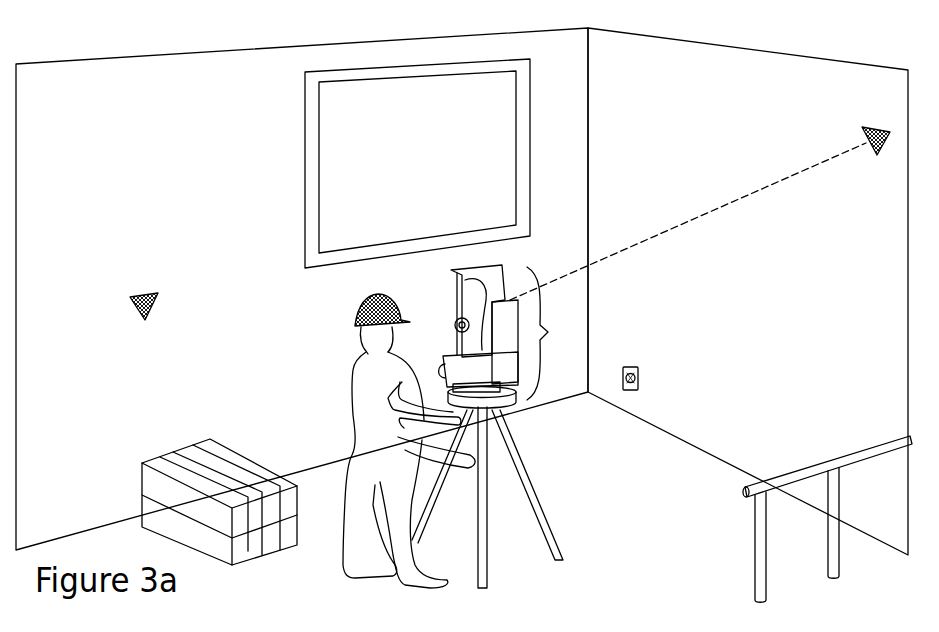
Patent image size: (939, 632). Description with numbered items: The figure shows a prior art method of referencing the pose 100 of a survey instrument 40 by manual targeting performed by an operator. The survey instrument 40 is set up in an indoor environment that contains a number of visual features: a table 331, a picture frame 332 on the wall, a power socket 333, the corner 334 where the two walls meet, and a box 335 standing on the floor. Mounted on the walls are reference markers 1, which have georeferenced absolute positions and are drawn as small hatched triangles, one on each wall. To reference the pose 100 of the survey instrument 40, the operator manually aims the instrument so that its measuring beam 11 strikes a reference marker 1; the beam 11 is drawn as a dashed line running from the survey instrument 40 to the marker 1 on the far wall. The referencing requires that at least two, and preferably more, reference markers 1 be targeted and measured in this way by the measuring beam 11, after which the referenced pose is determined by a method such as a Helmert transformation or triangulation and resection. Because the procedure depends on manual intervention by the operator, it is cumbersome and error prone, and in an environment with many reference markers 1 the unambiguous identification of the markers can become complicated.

The reference marker 1 is at (875, 125).
The measuring beam 11 is at (666, 233).
The survey instrument 40 is at (509, 336).
The pose 100 is at (505, 542).
The visual feature 331 is at (822, 462).
The visual feature 332 is at (318, 83).
The visual feature 333 is at (632, 367).
The visual feature 334 is at (588, 30).
The visual feature 335 is at (192, 443).